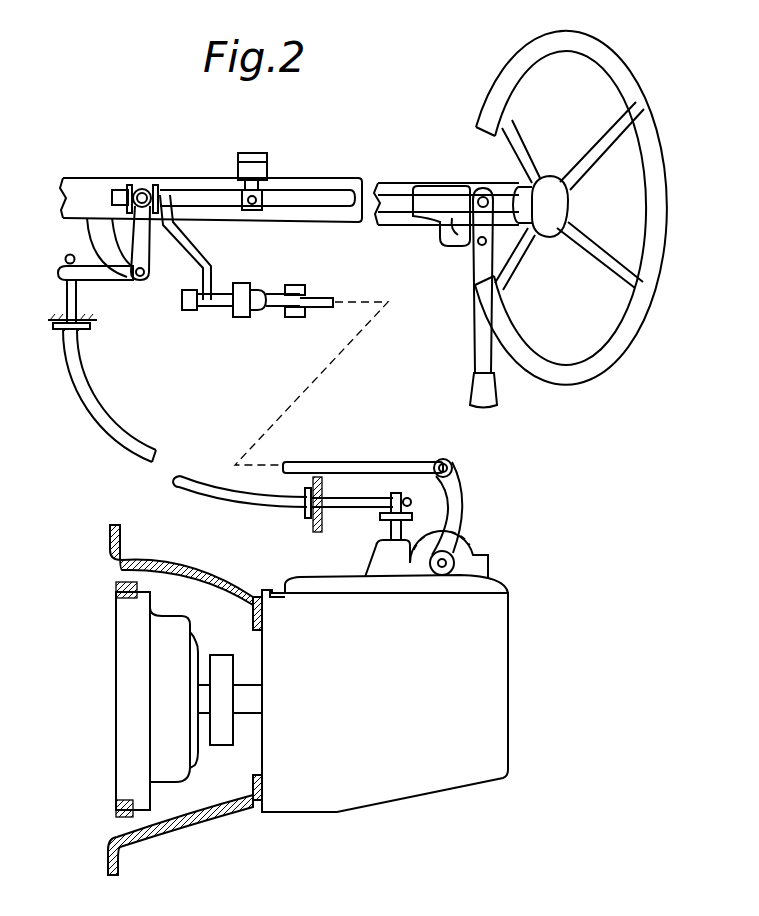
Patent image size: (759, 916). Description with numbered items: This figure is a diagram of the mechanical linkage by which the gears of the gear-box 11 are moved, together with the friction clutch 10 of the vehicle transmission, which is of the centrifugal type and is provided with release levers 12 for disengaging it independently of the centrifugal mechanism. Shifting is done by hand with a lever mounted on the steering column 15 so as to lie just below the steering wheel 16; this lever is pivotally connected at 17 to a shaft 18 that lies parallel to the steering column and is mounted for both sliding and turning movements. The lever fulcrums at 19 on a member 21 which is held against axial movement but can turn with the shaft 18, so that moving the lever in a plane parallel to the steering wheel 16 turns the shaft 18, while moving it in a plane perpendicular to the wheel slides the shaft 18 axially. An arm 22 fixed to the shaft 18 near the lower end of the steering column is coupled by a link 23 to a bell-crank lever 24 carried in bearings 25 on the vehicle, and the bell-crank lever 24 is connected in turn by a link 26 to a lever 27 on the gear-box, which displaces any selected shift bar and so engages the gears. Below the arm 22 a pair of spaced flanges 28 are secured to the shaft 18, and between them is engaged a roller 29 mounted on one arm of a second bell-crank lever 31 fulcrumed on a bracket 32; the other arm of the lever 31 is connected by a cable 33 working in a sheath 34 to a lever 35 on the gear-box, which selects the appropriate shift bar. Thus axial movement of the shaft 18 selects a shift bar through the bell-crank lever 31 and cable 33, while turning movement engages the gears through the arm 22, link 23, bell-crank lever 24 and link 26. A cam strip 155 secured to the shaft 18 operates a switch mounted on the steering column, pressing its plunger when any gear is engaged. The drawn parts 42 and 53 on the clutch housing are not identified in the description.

The friction clutch 10 is at (172, 772).
The gear-box 11 is at (385, 671).
The release levers 12 is at (478, 350).
The steering column 15 is at (384, 185).
The steering wheel 16 is at (518, 56).
The pivotal connection 17 is at (481, 198).
The shaft 18 is at (300, 190).
The fulcrum 19 is at (477, 243).
The member 21 is at (256, 153).
The arm 22 is at (197, 260).
The link 23 is at (214, 306).
The bell-crank lever 24 is at (262, 307).
The bearings 25 is at (300, 307).
The link 26 is at (322, 300).
The lever 27 is at (462, 500).
The spaced flanges 28 is at (130, 185).
The roller 29 is at (120, 190).
The bell-crank lever 31 is at (88, 276).
The bracket 32 is at (112, 248).
The cable 33 is at (352, 509).
The sheath 34 is at (148, 462).
The lever 35 is at (398, 493).
The plate 42 is at (134, 612).
The flanged shell 53 is at (227, 585).
The cam strip 155 is at (244, 195).